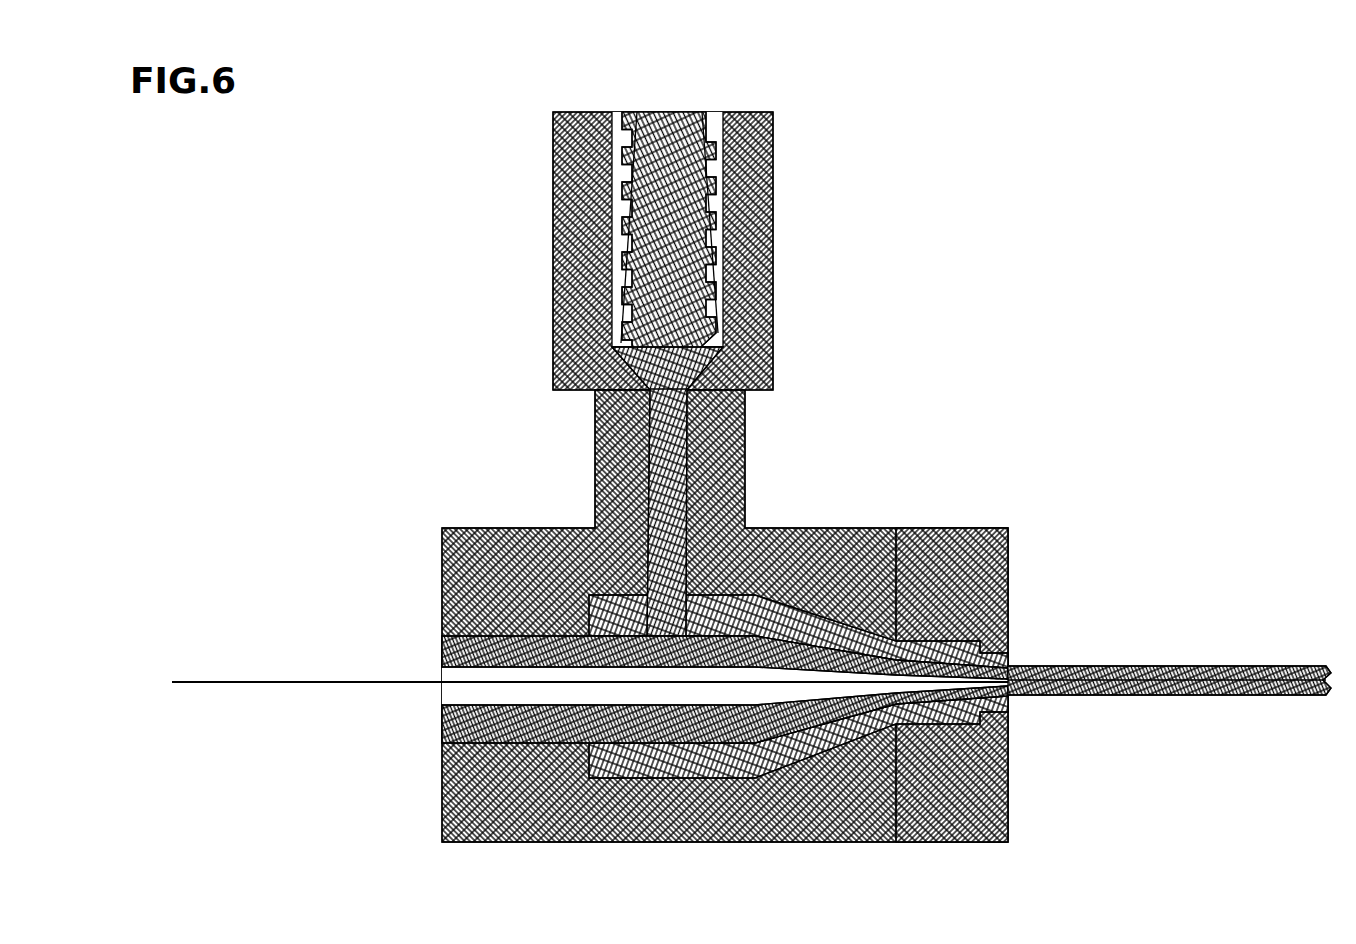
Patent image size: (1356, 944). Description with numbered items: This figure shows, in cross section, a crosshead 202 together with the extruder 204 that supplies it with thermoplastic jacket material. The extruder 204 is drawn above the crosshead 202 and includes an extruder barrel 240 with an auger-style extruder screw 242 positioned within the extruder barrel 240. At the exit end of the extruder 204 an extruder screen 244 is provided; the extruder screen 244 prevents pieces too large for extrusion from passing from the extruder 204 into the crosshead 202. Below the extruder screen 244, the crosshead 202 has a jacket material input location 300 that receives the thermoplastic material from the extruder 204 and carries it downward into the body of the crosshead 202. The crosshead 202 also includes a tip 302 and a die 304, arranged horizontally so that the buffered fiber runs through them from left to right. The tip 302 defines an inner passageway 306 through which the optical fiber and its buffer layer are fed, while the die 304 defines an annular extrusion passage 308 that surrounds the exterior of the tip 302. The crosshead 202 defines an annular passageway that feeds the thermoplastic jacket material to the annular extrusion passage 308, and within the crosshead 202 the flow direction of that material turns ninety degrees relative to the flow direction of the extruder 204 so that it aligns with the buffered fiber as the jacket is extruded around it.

The crosshead 202 is at (995, 500).
The extruder 204 is at (773, 240).
The extruder barrel 240 is at (743, 112).
The extruder screw 242 is at (657, 112).
The extruder screen 244 is at (663, 383).
The jacket material input location 300 is at (688, 433).
The tip 302 is at (441, 652).
The die 304 is at (1008, 655).
The inner passageway 306 is at (1000, 693).
The annular extrusion passage 308 is at (1008, 668).